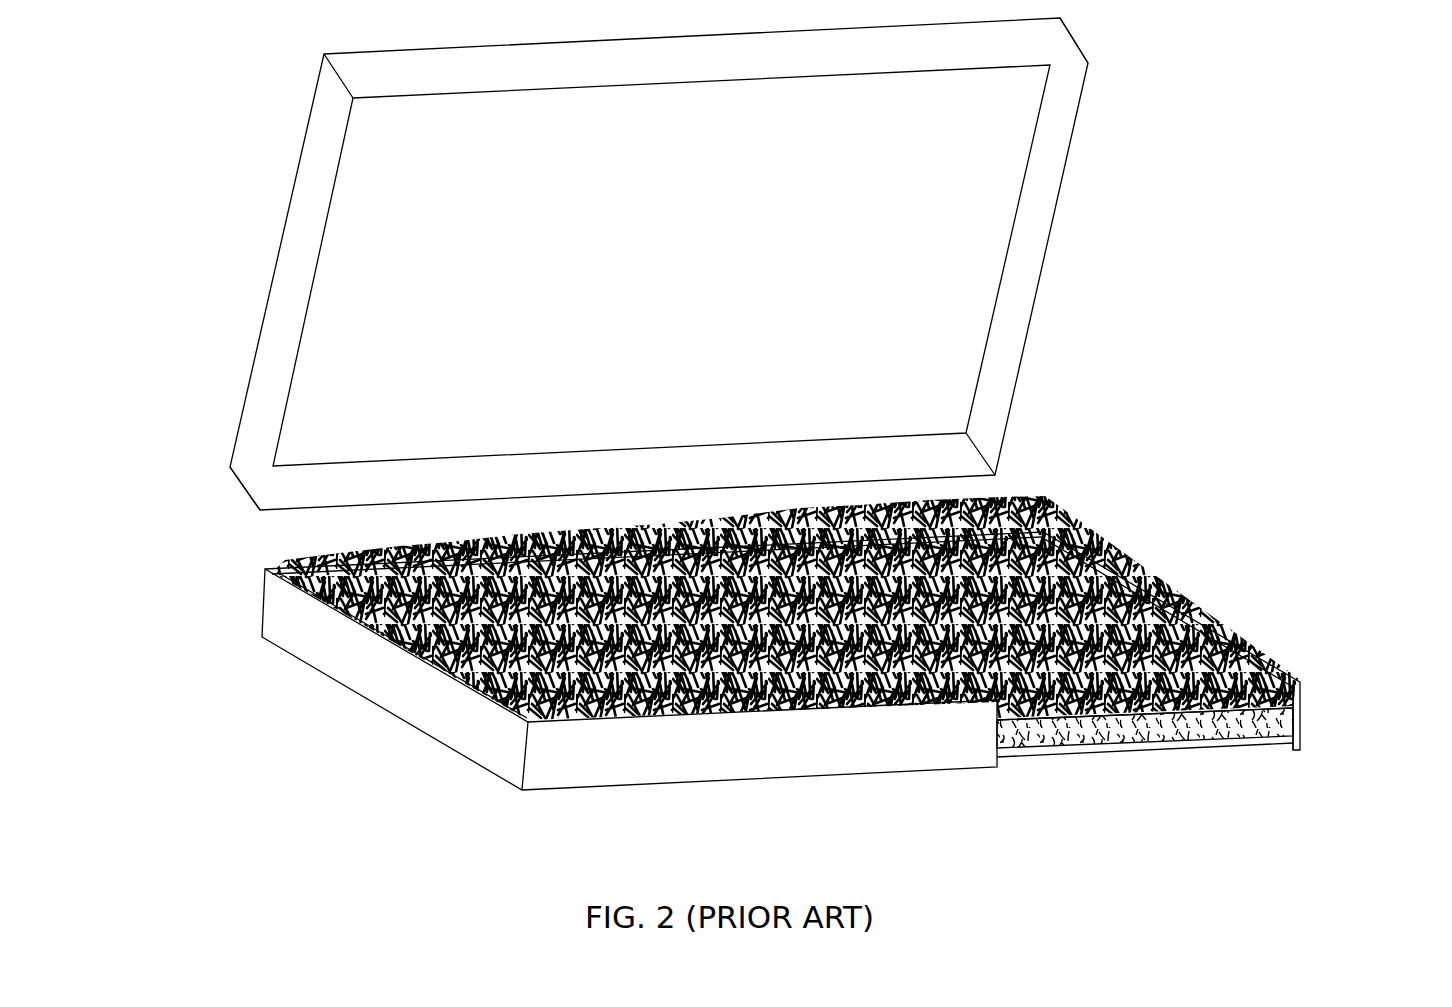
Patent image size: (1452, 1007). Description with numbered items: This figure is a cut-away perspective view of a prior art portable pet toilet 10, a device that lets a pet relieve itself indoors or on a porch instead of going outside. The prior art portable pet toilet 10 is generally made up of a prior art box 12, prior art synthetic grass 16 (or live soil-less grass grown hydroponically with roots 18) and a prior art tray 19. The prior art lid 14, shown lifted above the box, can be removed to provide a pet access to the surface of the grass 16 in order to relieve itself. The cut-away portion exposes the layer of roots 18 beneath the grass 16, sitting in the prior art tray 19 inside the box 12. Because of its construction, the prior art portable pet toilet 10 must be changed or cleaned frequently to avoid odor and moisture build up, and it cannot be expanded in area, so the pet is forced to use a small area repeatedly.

The prior art portable pet toilet 10 is at (1125, 460).
The prior art box 12 is at (328, 638).
The prior art lid 14 is at (1025, 220).
The prior art synthetic grass 16 is at (1163, 600).
The roots 18 is at (1290, 683).
The prior art tray 19 is at (1207, 742).